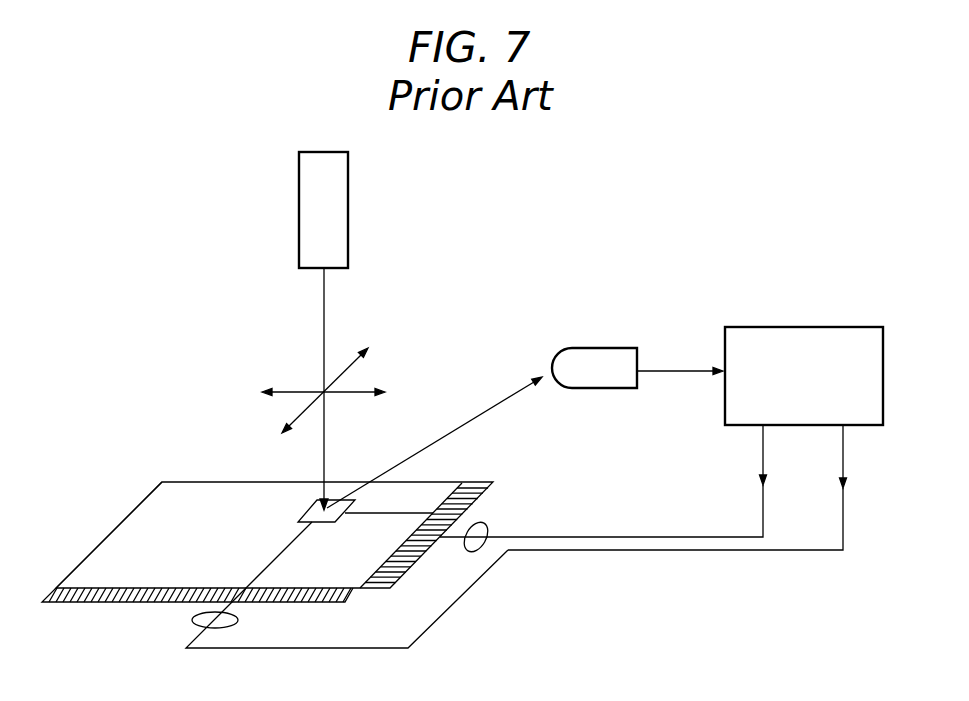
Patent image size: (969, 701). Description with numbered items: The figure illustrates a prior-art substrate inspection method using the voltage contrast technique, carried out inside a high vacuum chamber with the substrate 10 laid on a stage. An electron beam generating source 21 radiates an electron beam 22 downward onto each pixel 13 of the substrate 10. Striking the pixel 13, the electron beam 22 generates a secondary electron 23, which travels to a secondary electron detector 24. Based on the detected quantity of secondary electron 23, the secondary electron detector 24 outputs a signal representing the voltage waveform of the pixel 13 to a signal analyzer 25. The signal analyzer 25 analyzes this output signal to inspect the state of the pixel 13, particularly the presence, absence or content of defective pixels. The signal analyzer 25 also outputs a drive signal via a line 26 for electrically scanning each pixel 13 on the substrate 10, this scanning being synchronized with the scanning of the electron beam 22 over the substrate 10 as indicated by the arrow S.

The substrate 10 is at (187, 457).
The pixel 13 is at (297, 517).
The electron beam generating source 21 is at (348, 180).
The electron beam 22 is at (325, 347).
The secondary electron 23 is at (475, 420).
The secondary electron detector 24 is at (583, 348).
The signal analyzer 25 is at (845, 327).
The line 26 is at (672, 538).